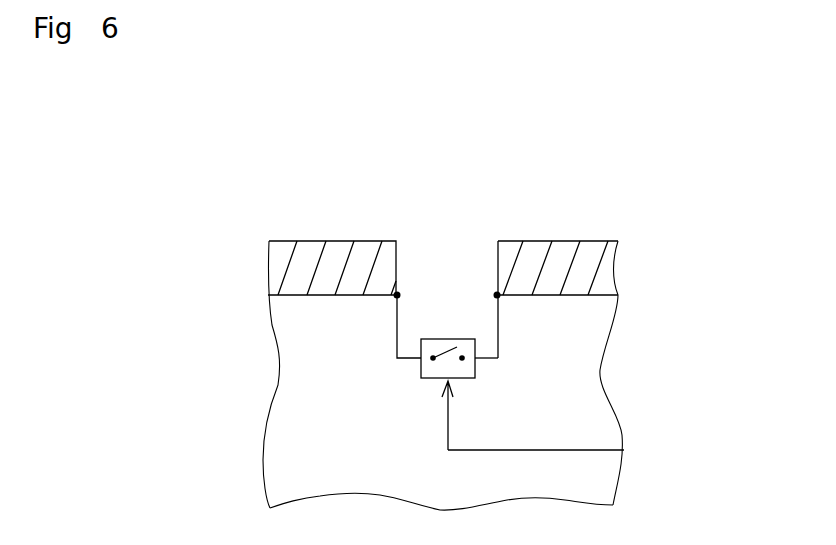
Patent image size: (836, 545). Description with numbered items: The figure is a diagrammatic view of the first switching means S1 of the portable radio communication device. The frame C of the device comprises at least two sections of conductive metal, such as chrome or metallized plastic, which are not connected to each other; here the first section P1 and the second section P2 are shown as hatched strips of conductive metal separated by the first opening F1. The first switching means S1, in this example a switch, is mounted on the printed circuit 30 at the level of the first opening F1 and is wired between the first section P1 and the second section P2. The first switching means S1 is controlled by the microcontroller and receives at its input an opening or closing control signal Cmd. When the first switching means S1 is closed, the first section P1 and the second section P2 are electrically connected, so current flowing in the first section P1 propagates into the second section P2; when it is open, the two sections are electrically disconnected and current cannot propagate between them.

The printed circuit 30 is at (543, 340).
The first section P1 is at (360, 247).
The second section P2 is at (537, 247).
The first opening F1 is at (433, 241).
The frame C is at (283, 267).
The first switching means S1 is at (423, 380).
The opening or closing control signal Cmd is at (533, 415).